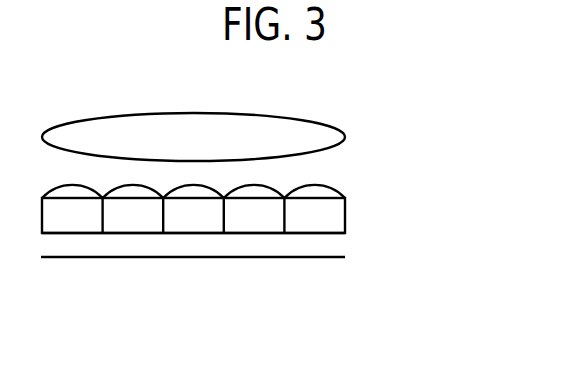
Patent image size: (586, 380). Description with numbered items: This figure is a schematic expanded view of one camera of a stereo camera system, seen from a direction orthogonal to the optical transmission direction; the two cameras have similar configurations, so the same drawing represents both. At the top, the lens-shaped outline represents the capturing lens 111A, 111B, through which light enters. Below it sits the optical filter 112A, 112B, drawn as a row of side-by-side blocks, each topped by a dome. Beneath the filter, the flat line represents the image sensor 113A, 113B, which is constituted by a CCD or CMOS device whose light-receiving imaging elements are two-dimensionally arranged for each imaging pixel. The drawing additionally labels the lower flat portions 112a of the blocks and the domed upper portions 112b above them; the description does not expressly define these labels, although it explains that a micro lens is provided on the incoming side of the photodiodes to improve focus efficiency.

The capturing lens 111A is at (271, 137).
The capturing lens 111B is at (343, 133).
The optical filter 112A is at (271, 233).
The optical filter 112B is at (348, 214).
The light emitting element 112a is at (253, 233).
The microlens 112b is at (274, 196).
The image sensor 113A is at (271, 257).
The image sensor 113B is at (348, 242).